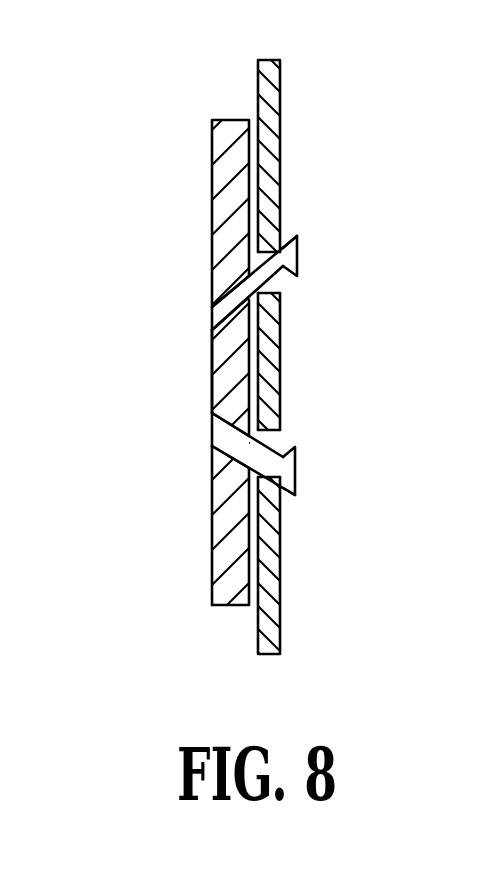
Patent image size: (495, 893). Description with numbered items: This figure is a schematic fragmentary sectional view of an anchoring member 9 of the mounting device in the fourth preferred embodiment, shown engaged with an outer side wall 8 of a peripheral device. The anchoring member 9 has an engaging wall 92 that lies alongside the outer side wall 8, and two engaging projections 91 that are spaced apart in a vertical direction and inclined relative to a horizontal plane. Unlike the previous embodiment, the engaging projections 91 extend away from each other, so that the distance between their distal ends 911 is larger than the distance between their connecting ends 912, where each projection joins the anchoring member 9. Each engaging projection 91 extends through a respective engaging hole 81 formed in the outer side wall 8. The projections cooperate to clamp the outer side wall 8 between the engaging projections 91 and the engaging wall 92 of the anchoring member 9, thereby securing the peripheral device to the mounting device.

The outer side wall 8 is at (270, 107).
The engaging hole 81 is at (277, 293).
The anchoring member 9 is at (228, 118).
The engaging projection 91 is at (274, 236).
The distal end 911 is at (297, 246).
The connecting end 912 is at (228, 266).
The engaging wall 92 is at (213, 305).